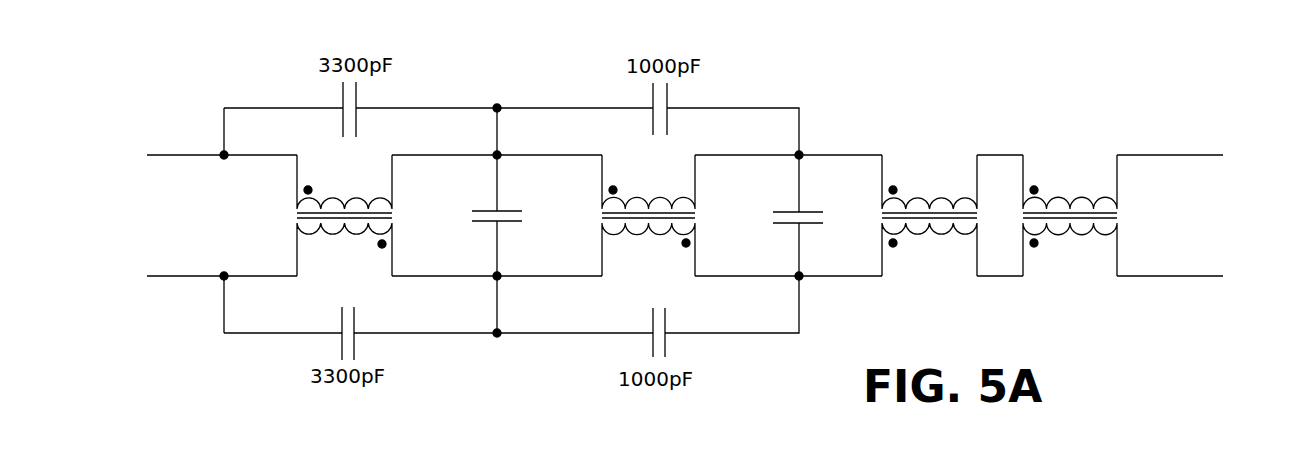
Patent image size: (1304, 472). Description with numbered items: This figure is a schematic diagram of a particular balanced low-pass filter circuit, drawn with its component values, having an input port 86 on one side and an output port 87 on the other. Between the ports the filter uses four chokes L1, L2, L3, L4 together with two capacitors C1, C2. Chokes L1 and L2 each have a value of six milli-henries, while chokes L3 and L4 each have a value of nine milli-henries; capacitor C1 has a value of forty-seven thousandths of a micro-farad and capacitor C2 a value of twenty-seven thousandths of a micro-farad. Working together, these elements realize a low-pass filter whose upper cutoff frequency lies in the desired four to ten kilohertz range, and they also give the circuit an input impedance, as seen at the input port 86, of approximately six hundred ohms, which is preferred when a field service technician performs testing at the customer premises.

The input port 86 is at (147, 259).
The output port 87 is at (1204, 247).
The choke L1 is at (344, 215).
The choke L2 is at (648, 215).
The choke L3 is at (929, 215).
The choke L4 is at (1070, 215).
The capacitor C1 is at (530, 220).
The capacitor C2 is at (828, 215).